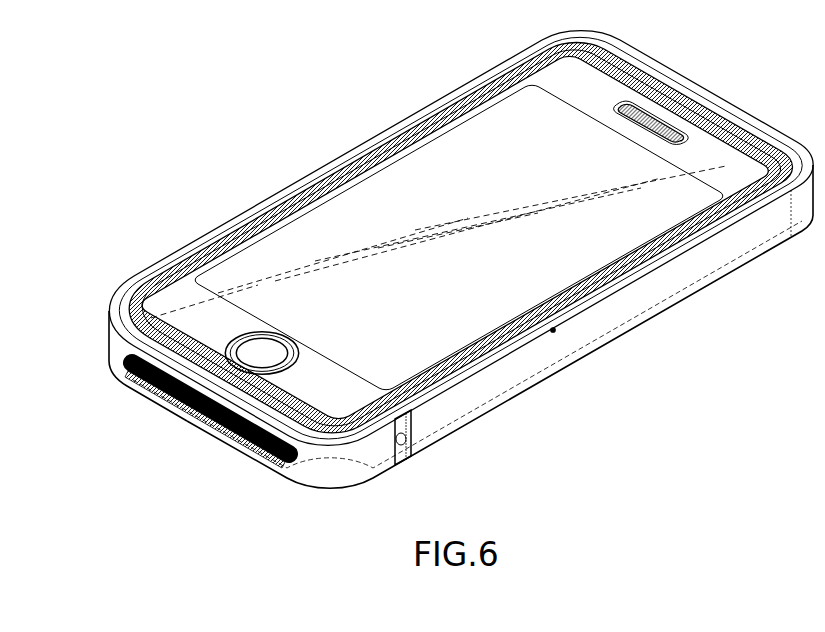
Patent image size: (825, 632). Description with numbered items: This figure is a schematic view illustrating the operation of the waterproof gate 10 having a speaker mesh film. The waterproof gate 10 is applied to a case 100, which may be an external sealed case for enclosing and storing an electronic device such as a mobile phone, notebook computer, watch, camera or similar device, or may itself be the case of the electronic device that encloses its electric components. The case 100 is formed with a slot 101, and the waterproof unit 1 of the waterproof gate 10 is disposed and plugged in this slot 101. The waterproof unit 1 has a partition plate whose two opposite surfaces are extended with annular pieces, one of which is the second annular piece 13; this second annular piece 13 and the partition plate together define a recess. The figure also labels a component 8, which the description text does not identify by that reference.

The case 100 is at (435, 260).
The waterproof unit 1 is at (144, 388).
The seal 8 is at (172, 384).
The waterproof gate 10 is at (190, 408).
The second annular piece 13 is at (192, 392).
The slot 101 is at (121, 380).